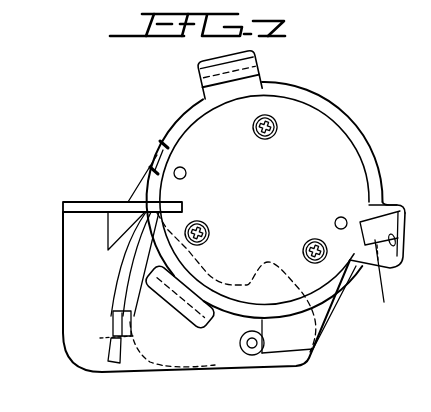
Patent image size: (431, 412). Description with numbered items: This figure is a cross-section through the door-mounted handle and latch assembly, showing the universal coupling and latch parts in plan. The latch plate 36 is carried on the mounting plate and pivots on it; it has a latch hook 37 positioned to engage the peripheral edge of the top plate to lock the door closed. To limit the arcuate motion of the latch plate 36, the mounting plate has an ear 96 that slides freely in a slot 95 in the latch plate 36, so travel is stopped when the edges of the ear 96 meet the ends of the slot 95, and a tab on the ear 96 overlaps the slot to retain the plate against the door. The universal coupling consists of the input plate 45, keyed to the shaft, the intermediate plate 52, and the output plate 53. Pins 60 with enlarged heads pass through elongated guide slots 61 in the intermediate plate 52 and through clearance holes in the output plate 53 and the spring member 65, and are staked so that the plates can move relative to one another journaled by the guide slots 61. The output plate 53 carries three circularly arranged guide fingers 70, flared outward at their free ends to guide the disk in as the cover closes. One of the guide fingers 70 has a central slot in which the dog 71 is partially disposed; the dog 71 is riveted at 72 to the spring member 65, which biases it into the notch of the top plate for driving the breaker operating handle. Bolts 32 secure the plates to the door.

The bolts 32 is at (278, 127).
The latch plate 36 is at (63, 329).
The latch hook 37 is at (137, 201).
The universal input plate 45 is at (158, 146).
The intermediate plate 52 is at (367, 143).
The output plate 53 is at (347, 128).
The pins 60 is at (187, 173).
The elongated guide slots 61 is at (164, 166).
The spring member 65 is at (405, 243).
The guide fingers 70 is at (259, 65).
The dog 71 is at (384, 302).
The rivet 72 is at (397, 266).
The slot 95 is at (117, 277).
The ear 96 is at (118, 324).